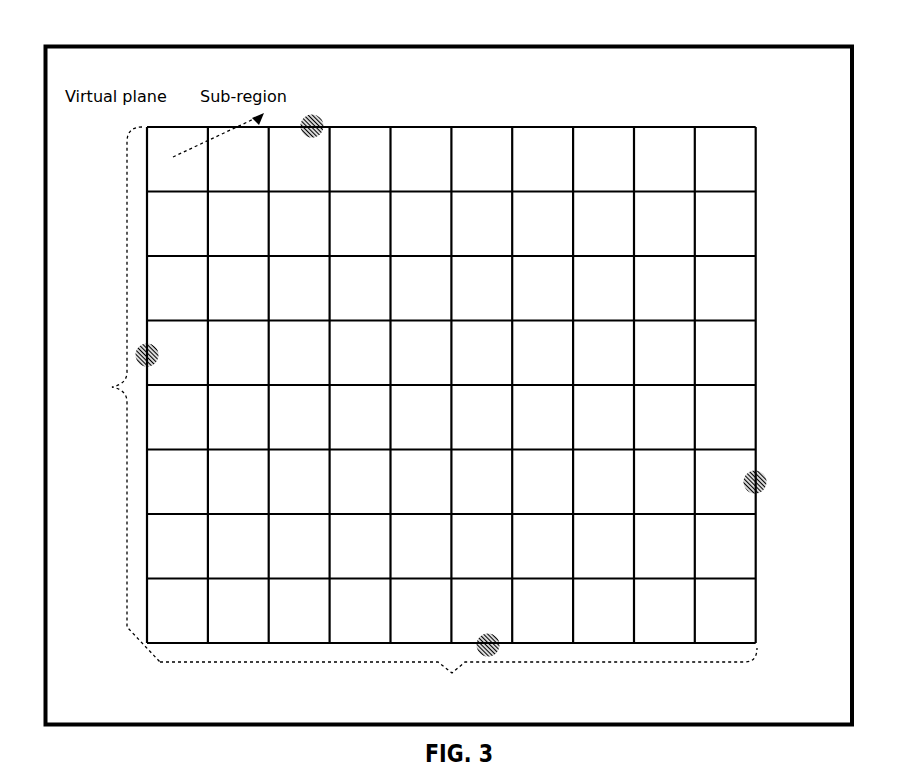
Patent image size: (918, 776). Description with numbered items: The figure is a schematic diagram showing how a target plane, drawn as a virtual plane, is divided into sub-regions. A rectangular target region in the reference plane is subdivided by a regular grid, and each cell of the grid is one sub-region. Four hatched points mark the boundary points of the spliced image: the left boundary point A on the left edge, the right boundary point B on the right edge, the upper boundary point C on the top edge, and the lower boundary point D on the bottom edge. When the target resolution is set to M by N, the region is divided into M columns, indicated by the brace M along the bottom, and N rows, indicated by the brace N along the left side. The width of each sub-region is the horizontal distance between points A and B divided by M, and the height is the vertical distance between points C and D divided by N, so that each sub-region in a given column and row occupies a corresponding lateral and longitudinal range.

The left boundary point A is at (163, 354).
The right boundary point B is at (768, 484).
The upper boundary point C is at (316, 111).
The lower boundary point D is at (487, 630).
The number of sub-regions in the vertical direction N is at (121, 394).
The number of sub-regions in the horizontal direction M is at (458, 678).